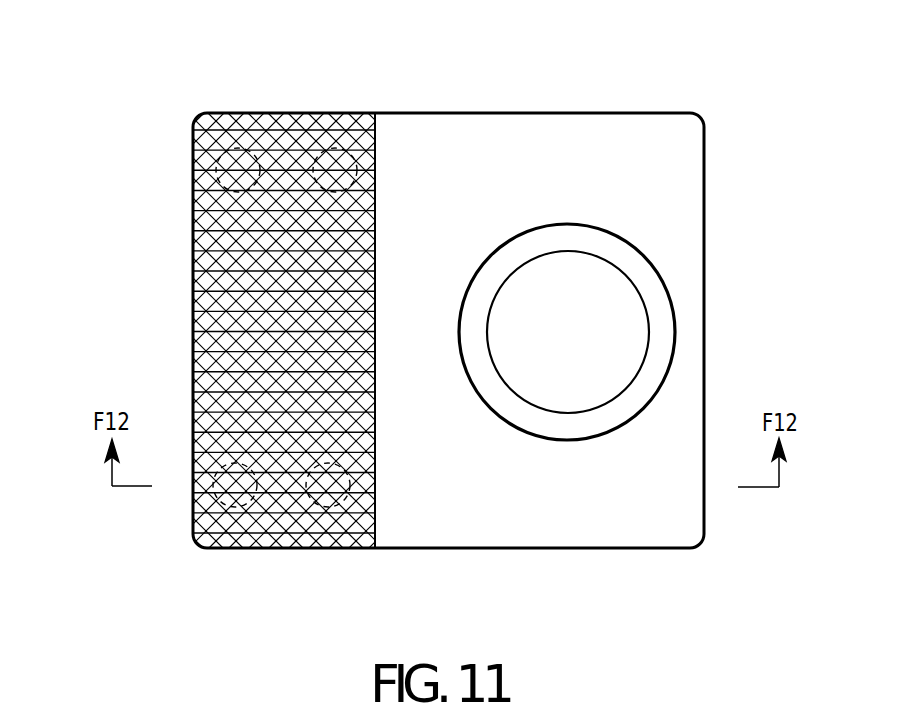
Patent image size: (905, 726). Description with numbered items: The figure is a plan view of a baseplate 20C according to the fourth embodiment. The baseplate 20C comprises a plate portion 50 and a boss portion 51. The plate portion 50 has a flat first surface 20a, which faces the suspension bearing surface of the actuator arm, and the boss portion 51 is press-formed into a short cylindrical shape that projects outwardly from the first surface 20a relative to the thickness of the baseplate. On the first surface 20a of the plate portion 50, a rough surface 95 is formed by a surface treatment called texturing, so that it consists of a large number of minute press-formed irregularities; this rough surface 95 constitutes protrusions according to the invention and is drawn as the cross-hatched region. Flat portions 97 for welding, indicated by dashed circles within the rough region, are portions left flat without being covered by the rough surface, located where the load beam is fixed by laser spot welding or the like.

The baseplate 20C is at (221, 109).
The first surface 20a is at (425, 130).
The plate portion 50 is at (604, 130).
The boss portion 51 is at (675, 333).
The rough surface 95 is at (205, 300).
The flat portions for welding 97 is at (248, 112).